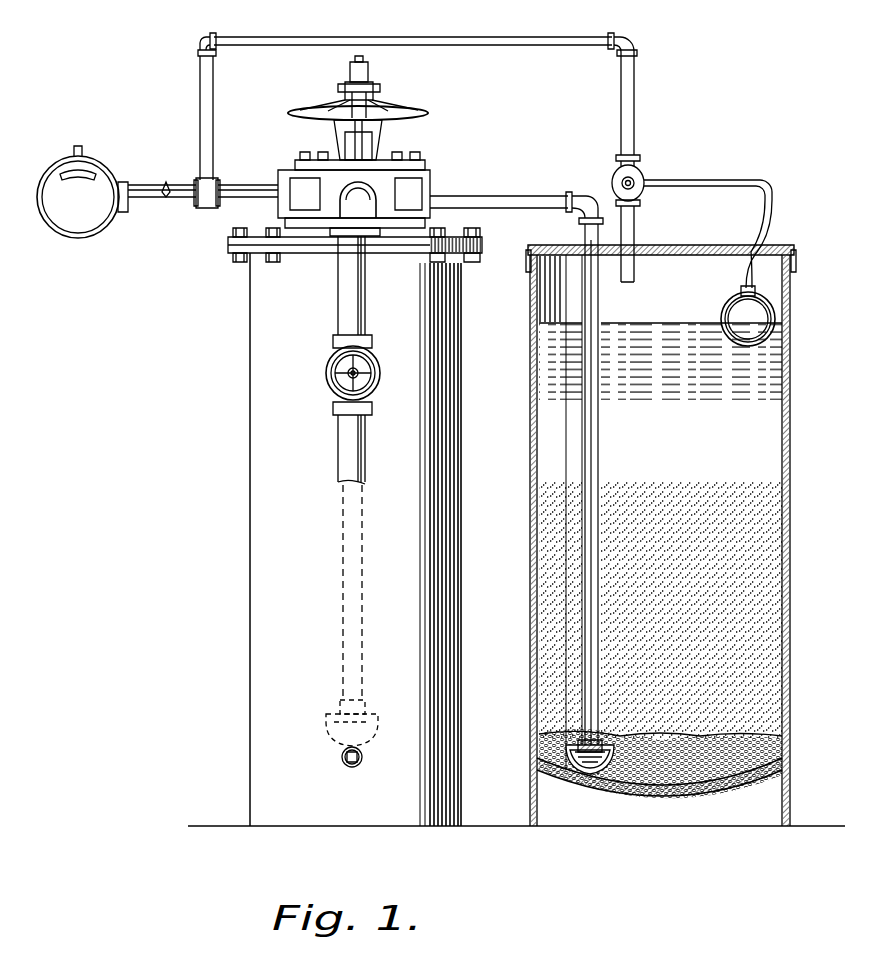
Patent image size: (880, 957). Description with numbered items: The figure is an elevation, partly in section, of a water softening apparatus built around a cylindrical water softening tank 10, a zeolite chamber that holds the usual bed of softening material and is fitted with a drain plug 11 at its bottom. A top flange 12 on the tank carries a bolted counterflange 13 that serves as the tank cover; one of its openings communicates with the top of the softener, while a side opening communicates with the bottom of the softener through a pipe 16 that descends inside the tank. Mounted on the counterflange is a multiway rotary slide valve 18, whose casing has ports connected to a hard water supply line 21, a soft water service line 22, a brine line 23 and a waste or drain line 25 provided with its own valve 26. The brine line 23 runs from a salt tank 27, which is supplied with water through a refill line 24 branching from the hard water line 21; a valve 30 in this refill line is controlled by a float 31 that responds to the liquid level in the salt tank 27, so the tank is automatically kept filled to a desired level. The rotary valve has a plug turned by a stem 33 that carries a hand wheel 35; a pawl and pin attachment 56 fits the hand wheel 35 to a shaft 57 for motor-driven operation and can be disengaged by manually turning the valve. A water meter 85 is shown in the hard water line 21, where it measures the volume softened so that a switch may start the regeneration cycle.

The water softening tank 10 is at (355, 539).
The drain plug 11 is at (350, 766).
The top flange 12 is at (226, 252).
The counterflange 13 is at (226, 239).
The pipe 16 is at (364, 590).
The multiway rotary slide valve 18 is at (428, 170).
The hard water supply line 21 is at (175, 208).
The soft water service line 22 is at (140, 212).
The brine line 23 is at (492, 198).
The refill line 24 is at (472, 48).
The waste or drain line 25 is at (369, 308).
The valve 26 is at (380, 368).
The salt tank 27 is at (661, 535).
The float valve 30 is at (646, 173).
The float 31 is at (728, 302).
The stem 33 is at (385, 125).
The hand wheel 35 is at (424, 110).
The pawl and pin attachment 56 is at (377, 86).
The shaft 57 is at (368, 66).
The water meter 85 is at (79, 238).